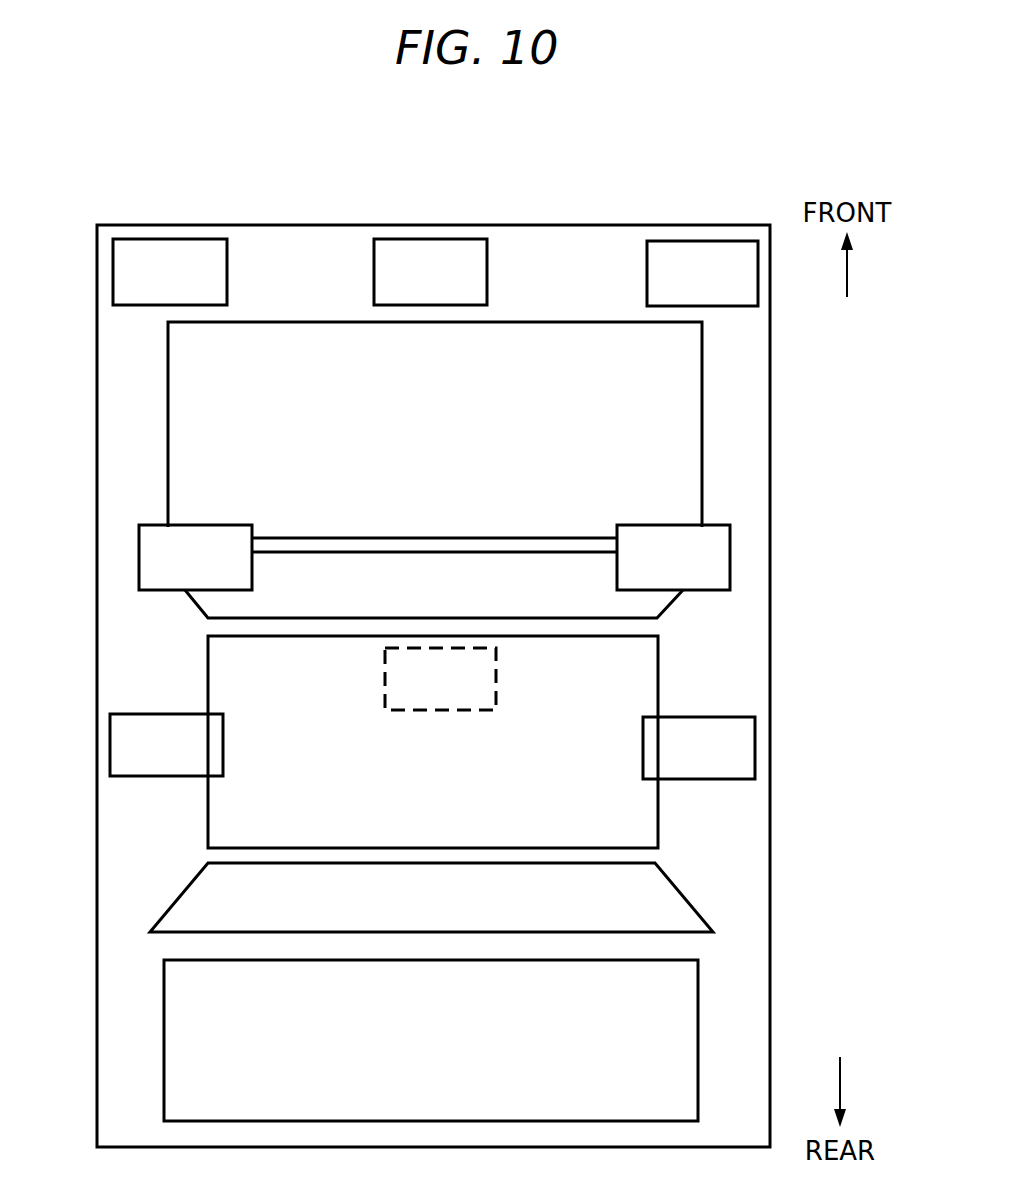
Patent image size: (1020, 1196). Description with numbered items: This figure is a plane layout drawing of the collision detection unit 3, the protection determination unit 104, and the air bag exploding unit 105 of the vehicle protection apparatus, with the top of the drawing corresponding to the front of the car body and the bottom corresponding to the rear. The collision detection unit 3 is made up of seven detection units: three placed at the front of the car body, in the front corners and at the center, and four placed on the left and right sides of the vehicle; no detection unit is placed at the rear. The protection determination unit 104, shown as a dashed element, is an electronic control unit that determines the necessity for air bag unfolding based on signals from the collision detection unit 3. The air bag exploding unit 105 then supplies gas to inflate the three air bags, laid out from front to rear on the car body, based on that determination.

The collision detection unit 3 is at (168, 239).
The protection determination unit 104 is at (496, 683).
The air bag exploding unit 105 is at (702, 424).